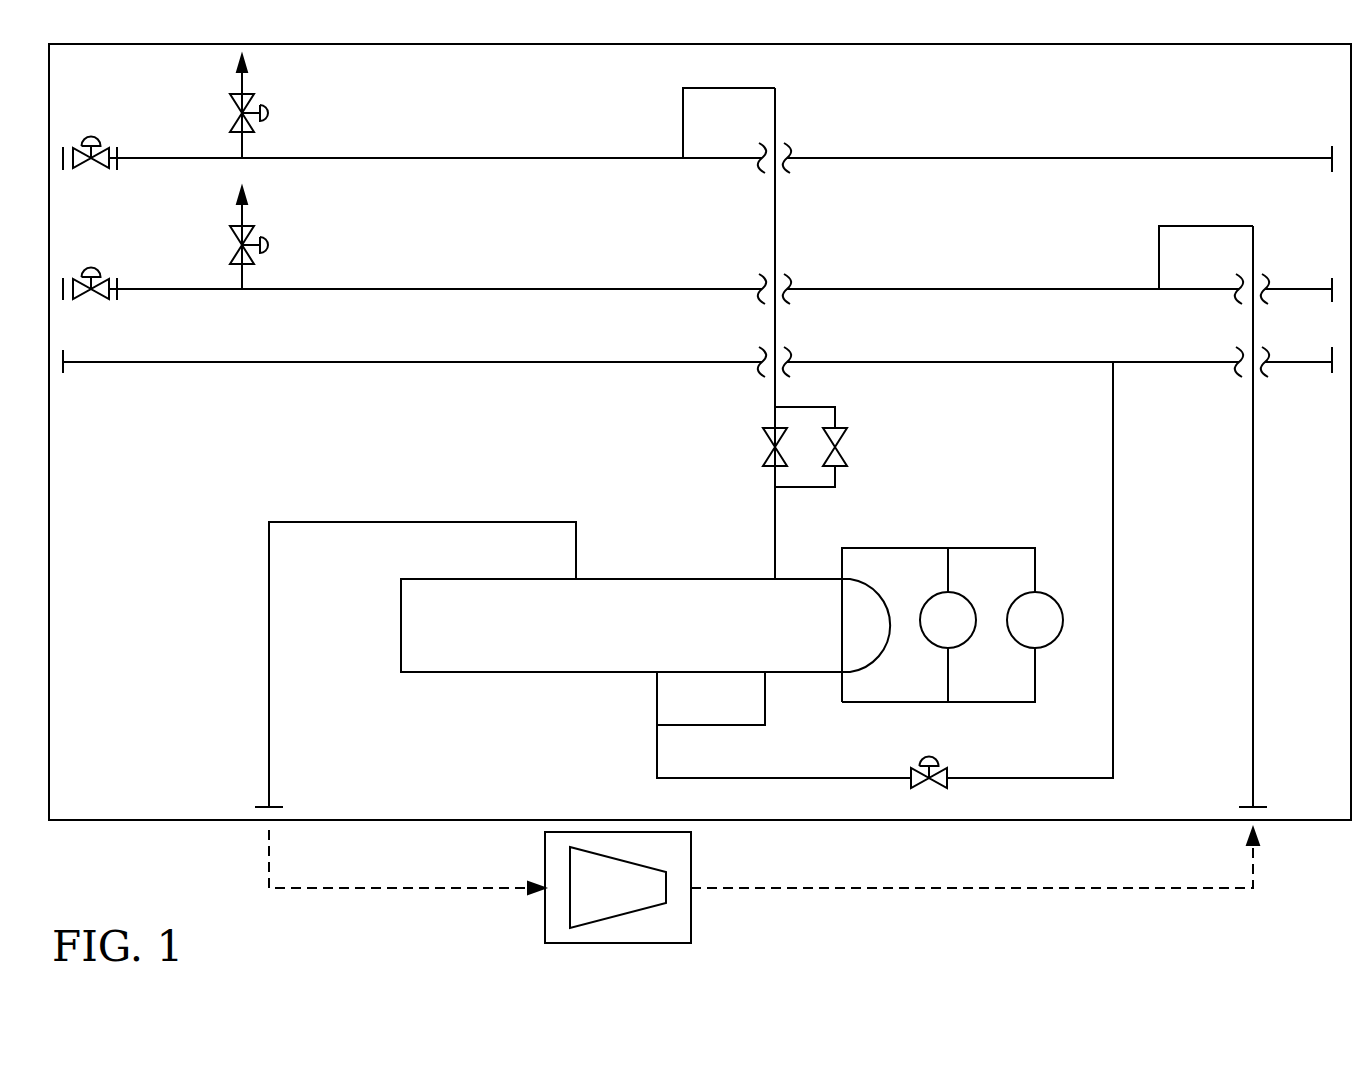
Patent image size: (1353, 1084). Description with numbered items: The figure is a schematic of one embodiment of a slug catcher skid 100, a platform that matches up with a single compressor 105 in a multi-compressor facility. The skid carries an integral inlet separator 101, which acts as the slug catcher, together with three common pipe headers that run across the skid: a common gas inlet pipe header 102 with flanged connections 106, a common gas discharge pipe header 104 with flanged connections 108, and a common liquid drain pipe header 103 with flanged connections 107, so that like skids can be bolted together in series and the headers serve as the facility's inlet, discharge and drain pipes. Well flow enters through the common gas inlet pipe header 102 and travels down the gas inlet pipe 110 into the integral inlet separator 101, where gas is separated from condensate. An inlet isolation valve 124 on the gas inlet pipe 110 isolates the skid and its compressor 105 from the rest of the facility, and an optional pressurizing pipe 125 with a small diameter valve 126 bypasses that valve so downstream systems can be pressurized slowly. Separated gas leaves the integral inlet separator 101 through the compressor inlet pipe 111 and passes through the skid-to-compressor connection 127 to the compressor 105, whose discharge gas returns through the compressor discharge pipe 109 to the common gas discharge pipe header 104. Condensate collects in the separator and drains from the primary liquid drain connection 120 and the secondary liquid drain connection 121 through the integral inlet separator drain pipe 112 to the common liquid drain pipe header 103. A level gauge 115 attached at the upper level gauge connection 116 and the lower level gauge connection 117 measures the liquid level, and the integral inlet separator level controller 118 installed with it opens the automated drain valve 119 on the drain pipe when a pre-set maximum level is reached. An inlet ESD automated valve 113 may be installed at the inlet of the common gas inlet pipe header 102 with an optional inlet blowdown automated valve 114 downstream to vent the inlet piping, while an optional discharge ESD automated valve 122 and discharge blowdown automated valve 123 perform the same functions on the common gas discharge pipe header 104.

The slug catcher skid 100 is at (207, 836).
The integral inlet separator 101 is at (645, 625).
The common gas inlet pipe header 102 is at (437, 157).
The common liquid drain pipe header 103 is at (437, 362).
The common gas discharge pipe header 104 is at (437, 289).
The compressor 105 is at (691, 855).
The flanged connections 106 is at (117, 170).
The flanged connections 107 is at (64, 373).
The flanged connections 108 is at (117, 300).
The compressor discharge pipe 109 is at (1253, 675).
The gas inlet pipe 110 is at (775, 525).
The compressor inlet pipe 111 is at (269, 627).
The integral inlet separator drain pipe 112 is at (1113, 670).
The inlet ESD automated valve 113 is at (93, 136).
The inlet blowdown automated valve 114 is at (270, 108).
The level gauge 115 is at (948, 620).
The upper level gauge connection 116 is at (842, 576).
The lower level gauge connection 117 is at (842, 673).
The integral inlet separator level controller 118 is at (1035, 620).
The automated drain valve 119 is at (950, 770).
The primary liquid drain connection 120 is at (657, 677).
The secondary liquid drain connection 121 is at (765, 677).
The discharge ESD automated valve 122 is at (98, 268).
The discharge blowdown automated valve 123 is at (272, 243).
The inlet isolation valve 124 is at (763, 440).
The pressurizing pipe 125 is at (836, 407).
The small diameter valve 126 is at (848, 440).
The skid-to-compressor connection 127 is at (283, 806).